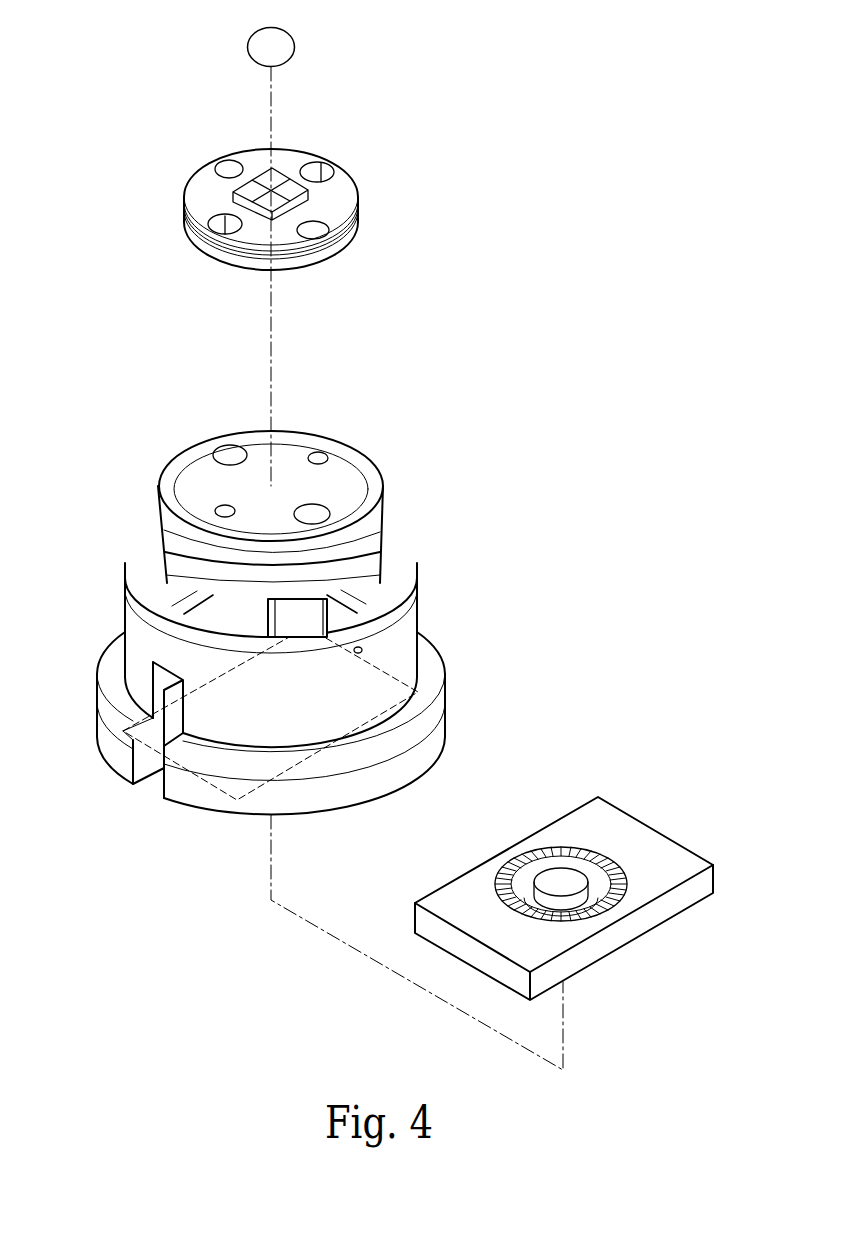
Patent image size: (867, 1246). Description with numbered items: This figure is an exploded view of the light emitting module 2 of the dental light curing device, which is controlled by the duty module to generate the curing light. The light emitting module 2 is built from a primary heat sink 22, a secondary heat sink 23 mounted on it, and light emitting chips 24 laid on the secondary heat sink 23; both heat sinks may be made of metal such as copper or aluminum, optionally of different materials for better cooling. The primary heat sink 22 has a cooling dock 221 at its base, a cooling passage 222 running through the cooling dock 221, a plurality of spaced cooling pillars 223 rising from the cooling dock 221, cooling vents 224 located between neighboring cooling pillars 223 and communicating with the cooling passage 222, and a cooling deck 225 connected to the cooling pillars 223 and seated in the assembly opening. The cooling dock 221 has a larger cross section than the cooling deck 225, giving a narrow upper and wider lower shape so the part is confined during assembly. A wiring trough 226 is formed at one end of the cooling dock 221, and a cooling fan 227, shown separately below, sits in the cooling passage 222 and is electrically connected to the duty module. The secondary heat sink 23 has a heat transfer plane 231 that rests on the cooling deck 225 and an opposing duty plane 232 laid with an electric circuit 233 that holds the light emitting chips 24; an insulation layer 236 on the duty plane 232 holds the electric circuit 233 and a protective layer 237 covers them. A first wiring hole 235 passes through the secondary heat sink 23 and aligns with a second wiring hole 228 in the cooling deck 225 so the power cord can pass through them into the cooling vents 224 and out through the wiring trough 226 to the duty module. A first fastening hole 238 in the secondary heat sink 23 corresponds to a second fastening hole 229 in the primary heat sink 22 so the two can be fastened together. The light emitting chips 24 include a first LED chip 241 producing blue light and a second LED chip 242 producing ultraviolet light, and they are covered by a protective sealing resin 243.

The light emitting module 2 is at (640, 88).
The primary heat sink 22 is at (148, 485).
The cooling dock 221 is at (420, 660).
The cooling passage 222 is at (237, 622).
The cooling pillars 223 is at (307, 610).
The cooling vents 224 is at (205, 613).
The cooling deck 225 is at (182, 560).
The wiring trough 226 is at (152, 679).
The cooling fan 227 is at (605, 942).
The second wiring hole 228 is at (320, 513).
The second fastening hole 229 is at (318, 458).
The secondary heat sink 23 is at (355, 165).
The heat transfer plane 231 is at (295, 273).
The duty plane 232 is at (343, 207).
The electric circuit 233 is at (233, 250).
The first wiring hole 235 is at (357, 227).
The insulation layer 236 is at (332, 248).
The protective layer 237 is at (190, 233).
The first fastening hole 238 is at (317, 170).
The light emitting chip 24 is at (125, 30).
The first LED chip 241 is at (242, 190).
The second LED chip 242 is at (262, 180).
The protective sealing resin 243 is at (253, 60).